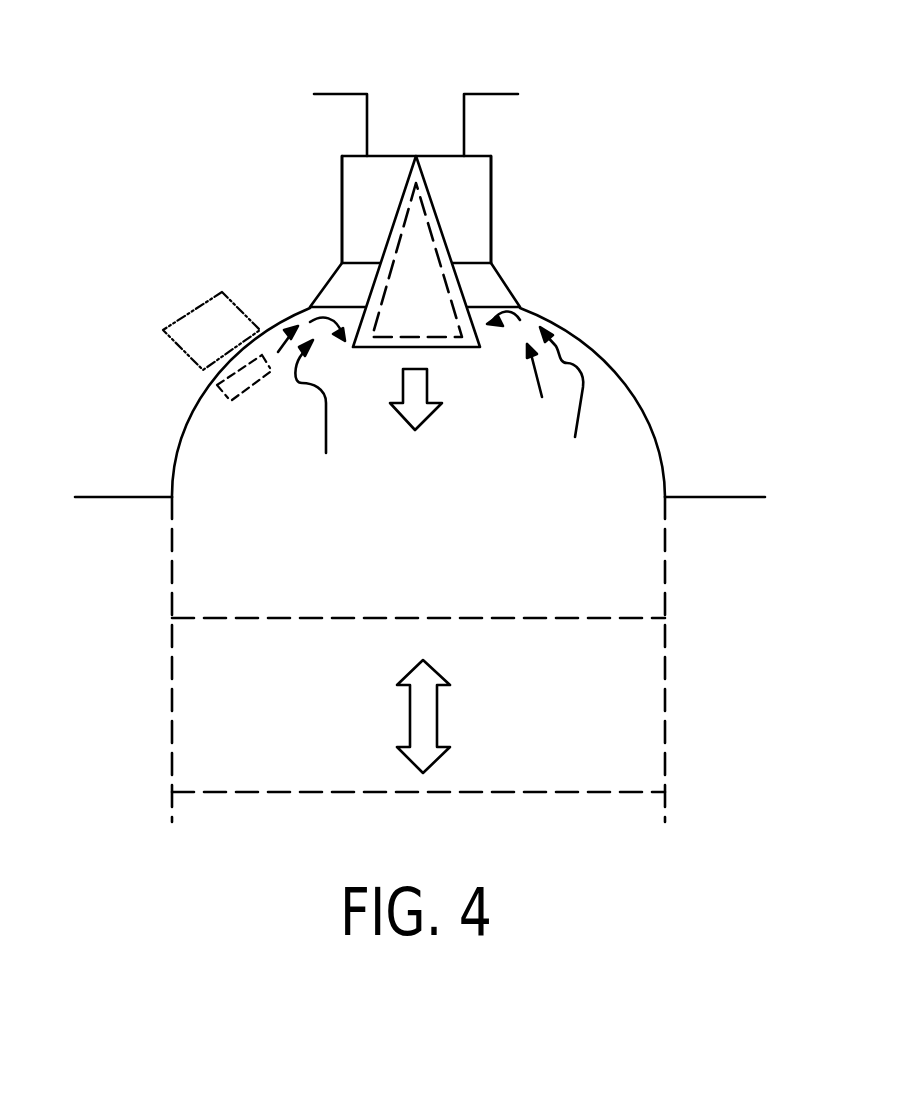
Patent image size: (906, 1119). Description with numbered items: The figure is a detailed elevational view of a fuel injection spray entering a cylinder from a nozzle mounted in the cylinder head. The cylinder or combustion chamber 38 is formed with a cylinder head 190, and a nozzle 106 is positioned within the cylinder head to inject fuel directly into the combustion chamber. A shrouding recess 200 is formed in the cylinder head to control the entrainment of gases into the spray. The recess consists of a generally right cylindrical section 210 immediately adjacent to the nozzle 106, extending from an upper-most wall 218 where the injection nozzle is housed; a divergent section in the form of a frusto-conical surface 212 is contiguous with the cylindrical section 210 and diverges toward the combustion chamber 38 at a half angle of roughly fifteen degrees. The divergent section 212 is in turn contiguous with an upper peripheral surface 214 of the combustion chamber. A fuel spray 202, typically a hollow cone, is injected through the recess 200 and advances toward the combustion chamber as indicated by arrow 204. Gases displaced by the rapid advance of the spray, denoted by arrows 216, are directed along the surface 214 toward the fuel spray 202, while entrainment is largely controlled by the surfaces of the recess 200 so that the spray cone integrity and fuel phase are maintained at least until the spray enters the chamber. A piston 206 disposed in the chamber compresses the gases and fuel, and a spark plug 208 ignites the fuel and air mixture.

The combustion chamber 38 is at (617, 568).
The nozzle 106 is at (387, 130).
The cylinder head 190 is at (595, 163).
The shrouding recess 200 is at (458, 193).
The fuel spray 202 is at (447, 250).
The arrow 204 is at (432, 422).
The piston 206 is at (437, 712).
The spark plug 208 is at (218, 380).
The right cylindrical section 210 is at (342, 181).
The frusto-conical surface 212 is at (324, 283).
The upper peripheral surface 214 is at (582, 335).
The arrows 216 is at (440, 404).
The upper-most wall 218 is at (416, 156).